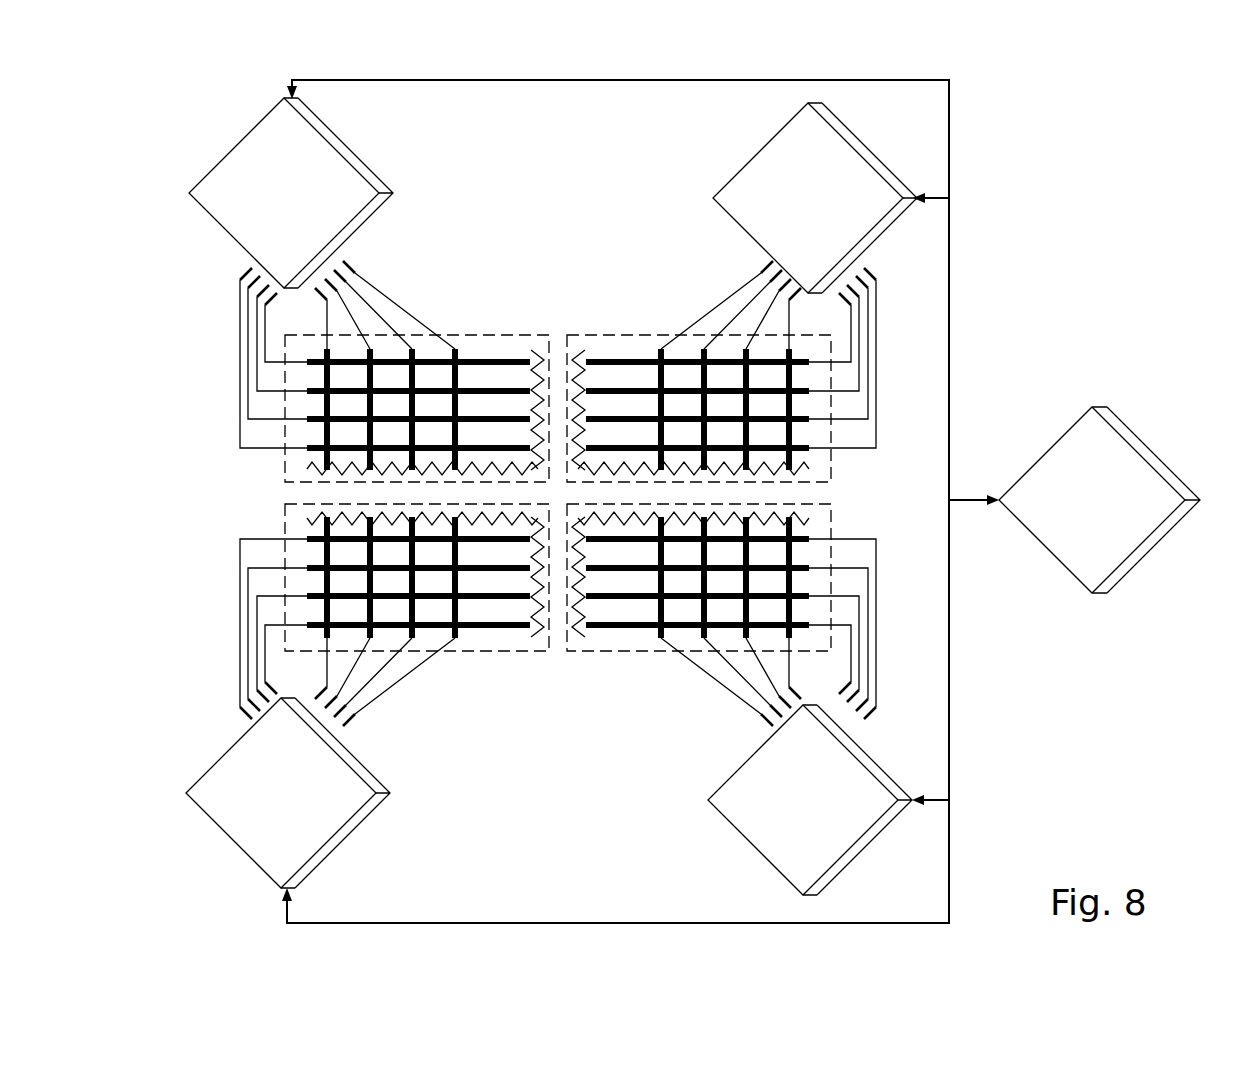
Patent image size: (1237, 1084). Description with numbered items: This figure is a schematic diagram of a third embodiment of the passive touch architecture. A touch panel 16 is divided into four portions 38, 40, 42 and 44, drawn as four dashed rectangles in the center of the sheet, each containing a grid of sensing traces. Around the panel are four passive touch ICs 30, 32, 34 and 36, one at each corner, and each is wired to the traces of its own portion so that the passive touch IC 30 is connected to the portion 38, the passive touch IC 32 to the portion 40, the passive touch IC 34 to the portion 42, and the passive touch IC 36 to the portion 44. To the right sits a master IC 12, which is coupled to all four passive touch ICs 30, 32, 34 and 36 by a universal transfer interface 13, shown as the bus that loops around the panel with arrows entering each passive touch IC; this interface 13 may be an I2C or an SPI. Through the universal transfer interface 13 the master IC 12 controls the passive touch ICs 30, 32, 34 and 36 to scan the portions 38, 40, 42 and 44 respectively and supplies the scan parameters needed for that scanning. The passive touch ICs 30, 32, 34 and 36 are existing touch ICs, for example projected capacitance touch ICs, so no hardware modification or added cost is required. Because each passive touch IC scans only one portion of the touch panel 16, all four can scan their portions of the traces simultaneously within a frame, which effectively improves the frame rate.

The master IC 12 is at (1155, 545).
The universal transfer interface 13 is at (950, 312).
The touch panel 16 is at (536, 311).
The passive touch IC 30 is at (758, 152).
The passive touch IC 32 is at (352, 142).
The passive touch IC 34 is at (343, 840).
The passive touch IC 36 is at (752, 846).
The portion 38 is at (622, 336).
The portion 40 is at (285, 468).
The portion 42 is at (497, 652).
The portion 44 is at (615, 652).